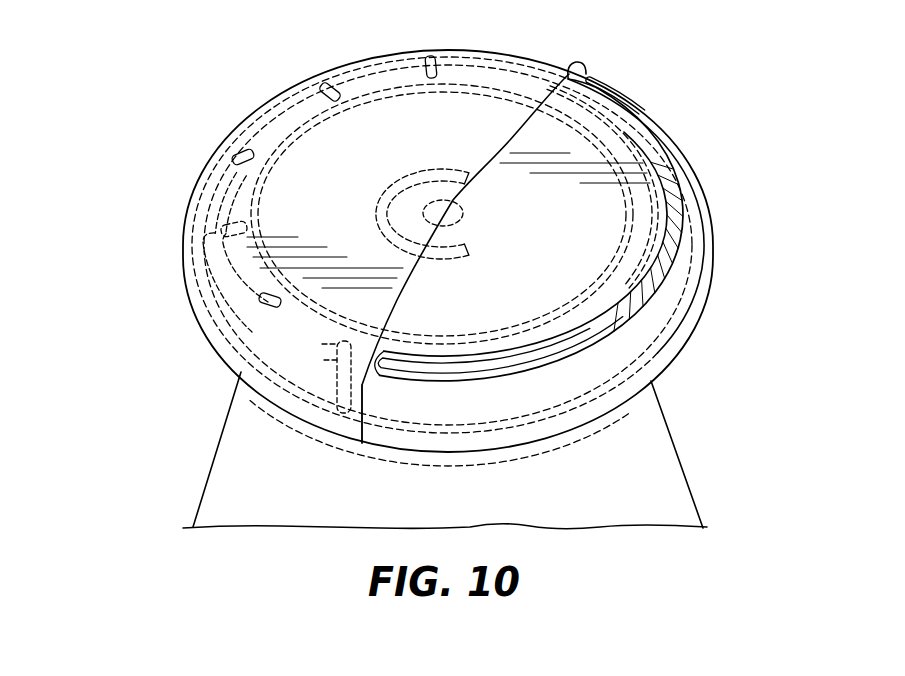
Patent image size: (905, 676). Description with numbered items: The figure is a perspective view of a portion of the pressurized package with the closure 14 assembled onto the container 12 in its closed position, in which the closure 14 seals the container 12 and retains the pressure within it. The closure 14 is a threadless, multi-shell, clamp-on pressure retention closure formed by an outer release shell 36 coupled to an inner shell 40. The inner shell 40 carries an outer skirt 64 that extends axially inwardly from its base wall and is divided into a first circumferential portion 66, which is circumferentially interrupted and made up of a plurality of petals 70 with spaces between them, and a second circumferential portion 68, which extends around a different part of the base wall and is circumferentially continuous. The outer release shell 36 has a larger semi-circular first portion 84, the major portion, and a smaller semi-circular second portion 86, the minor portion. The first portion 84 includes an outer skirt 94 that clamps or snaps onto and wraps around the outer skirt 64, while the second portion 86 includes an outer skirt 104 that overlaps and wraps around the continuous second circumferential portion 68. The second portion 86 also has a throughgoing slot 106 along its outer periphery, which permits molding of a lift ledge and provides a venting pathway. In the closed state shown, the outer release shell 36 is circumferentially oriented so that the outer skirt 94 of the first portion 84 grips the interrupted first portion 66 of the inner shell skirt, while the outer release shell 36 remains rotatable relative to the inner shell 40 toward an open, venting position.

The container 12 is at (663, 443).
The closure 14 is at (490, 54).
The outer release shell 36 is at (282, 103).
The inner shell 40 is at (674, 249).
The outer skirt 64 is at (188, 228).
The first circumferential portion 66 is at (275, 412).
The second circumferential portion 68 is at (697, 354).
The petals 70 is at (258, 352).
The first portion 84 is at (375, 66).
The second portion 86 is at (650, 118).
The outer skirt 94 is at (197, 311).
The outer skirt 104 is at (688, 286).
The throughgoing slot 106 is at (393, 372).